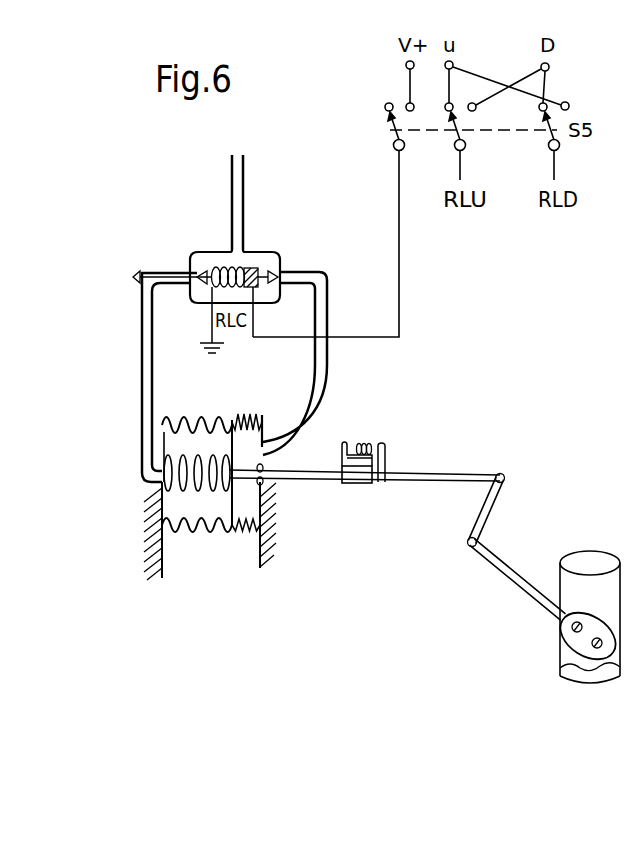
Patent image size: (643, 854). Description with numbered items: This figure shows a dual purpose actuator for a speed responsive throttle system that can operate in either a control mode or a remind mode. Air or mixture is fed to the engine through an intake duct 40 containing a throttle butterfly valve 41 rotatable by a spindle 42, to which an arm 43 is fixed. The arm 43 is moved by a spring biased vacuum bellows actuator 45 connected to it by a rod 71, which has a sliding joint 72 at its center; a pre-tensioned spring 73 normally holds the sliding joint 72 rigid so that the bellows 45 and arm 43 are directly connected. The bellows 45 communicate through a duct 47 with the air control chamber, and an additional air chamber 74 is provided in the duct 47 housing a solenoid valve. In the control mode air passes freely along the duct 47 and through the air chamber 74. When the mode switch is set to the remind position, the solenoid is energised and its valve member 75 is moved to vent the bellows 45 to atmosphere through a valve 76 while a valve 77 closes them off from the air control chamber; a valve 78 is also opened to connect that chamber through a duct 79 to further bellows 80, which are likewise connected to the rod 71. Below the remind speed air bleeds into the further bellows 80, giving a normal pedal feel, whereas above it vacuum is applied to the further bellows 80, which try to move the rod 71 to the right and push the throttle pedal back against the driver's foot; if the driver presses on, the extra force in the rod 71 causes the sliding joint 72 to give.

The intake duct 40 is at (588, 552).
The throttle butterfly valve 41 is at (565, 638).
The spindle 42 is at (517, 575).
The arm 43 is at (487, 518).
The vacuum bellows actuator 45 is at (193, 418).
The duct 47 is at (240, 195).
The rod 71 is at (405, 483).
The sliding joint 72 is at (385, 463).
The pre-tensioned spring 73 is at (358, 442).
The air chamber 74 is at (278, 257).
The valve member 75 is at (172, 275).
The valve 76 is at (137, 285).
The valve 77 is at (197, 289).
The valve 78 is at (281, 266).
The duct 79 is at (327, 368).
The further bellows 80 is at (258, 420).